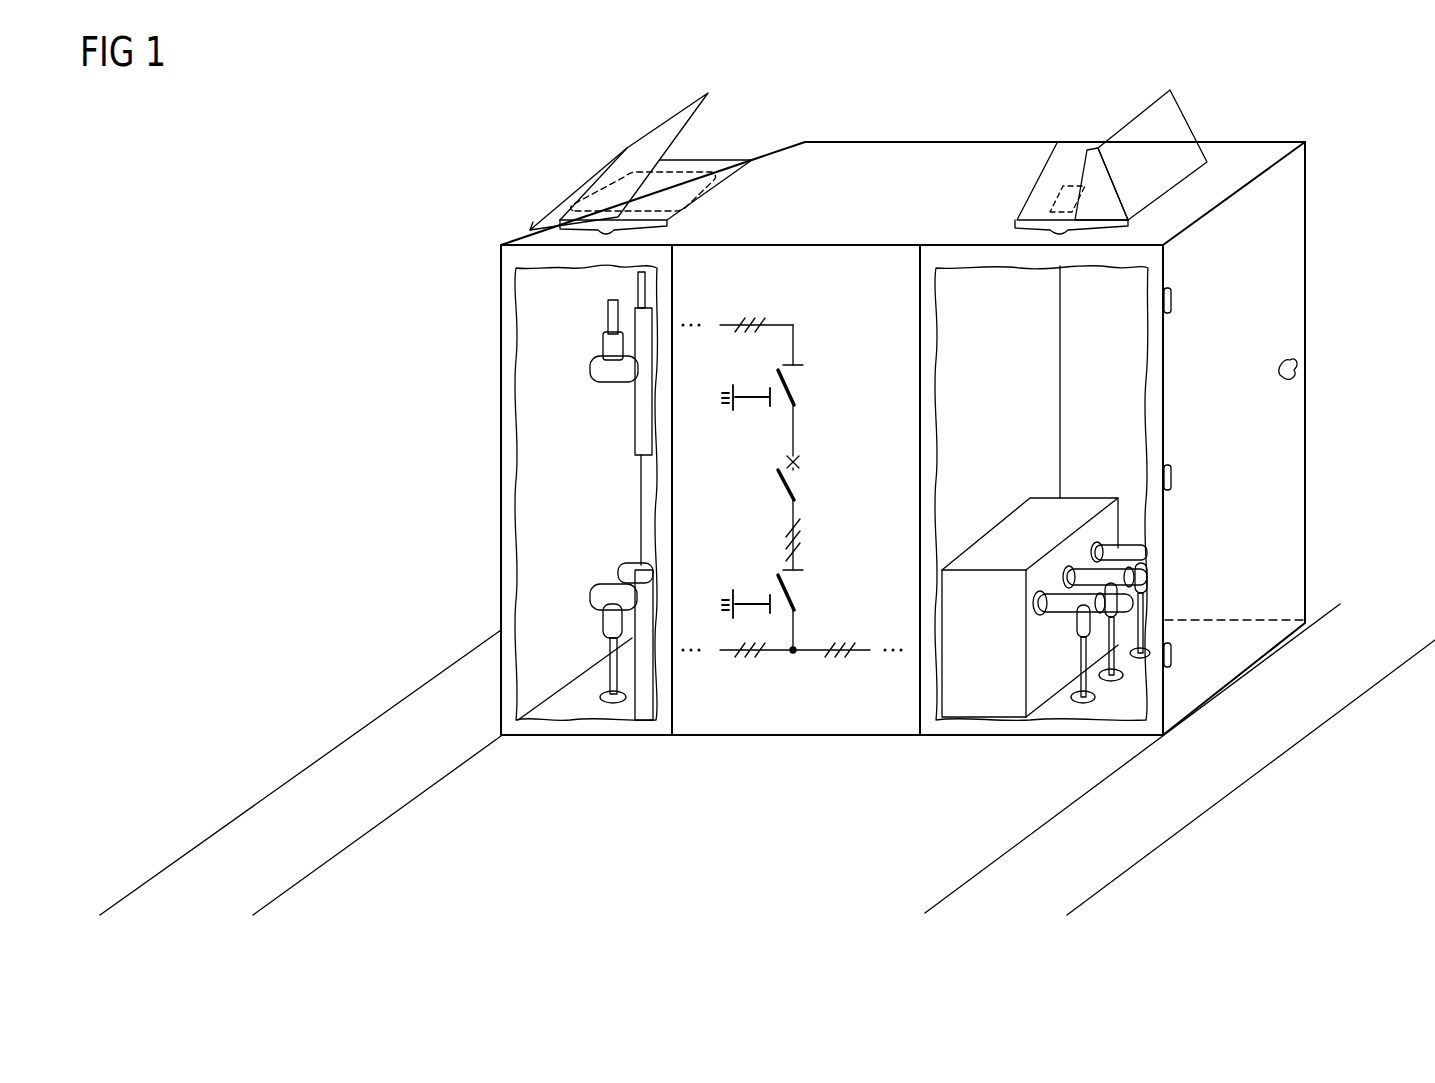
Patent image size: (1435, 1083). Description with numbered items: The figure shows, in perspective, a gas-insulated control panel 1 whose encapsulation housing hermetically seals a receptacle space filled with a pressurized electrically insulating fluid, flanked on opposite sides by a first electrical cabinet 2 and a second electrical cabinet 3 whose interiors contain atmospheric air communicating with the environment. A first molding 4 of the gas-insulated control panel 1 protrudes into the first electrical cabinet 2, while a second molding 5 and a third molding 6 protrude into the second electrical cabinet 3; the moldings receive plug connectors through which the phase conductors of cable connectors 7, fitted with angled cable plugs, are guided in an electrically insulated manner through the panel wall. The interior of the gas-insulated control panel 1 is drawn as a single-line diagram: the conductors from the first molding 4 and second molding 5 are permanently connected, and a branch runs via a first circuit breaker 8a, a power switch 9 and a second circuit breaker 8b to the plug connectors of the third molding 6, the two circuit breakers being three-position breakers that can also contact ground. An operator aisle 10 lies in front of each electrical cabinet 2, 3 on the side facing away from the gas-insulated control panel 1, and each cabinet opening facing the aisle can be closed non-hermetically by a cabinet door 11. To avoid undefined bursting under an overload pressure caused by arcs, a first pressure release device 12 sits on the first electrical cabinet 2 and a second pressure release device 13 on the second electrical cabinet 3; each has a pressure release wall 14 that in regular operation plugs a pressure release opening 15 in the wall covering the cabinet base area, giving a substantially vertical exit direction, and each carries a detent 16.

The gas-insulated control panel 1 is at (805, 737).
The first electrical cabinet 2 is at (1034, 528).
The second electrical cabinet 3 is at (593, 528).
The first molding 4 is at (1010, 540).
The second molding 5 is at (648, 694).
The third molding 6 is at (635, 418).
The cable connectors 7 is at (638, 285).
The first circuit breaker 8a is at (795, 590).
The second circuit breaker 8b is at (795, 385).
The power switch 9 is at (795, 480).
The operator aisle 10 is at (227, 845).
The cabinet door 11 is at (482, 429).
The first pressure release device 12 is at (1041, 479).
The second pressure release device 13 is at (586, 479).
The pressure release wall 14 is at (740, 157).
The pressure release opening 15 is at (703, 177).
The detent 16 is at (657, 113).